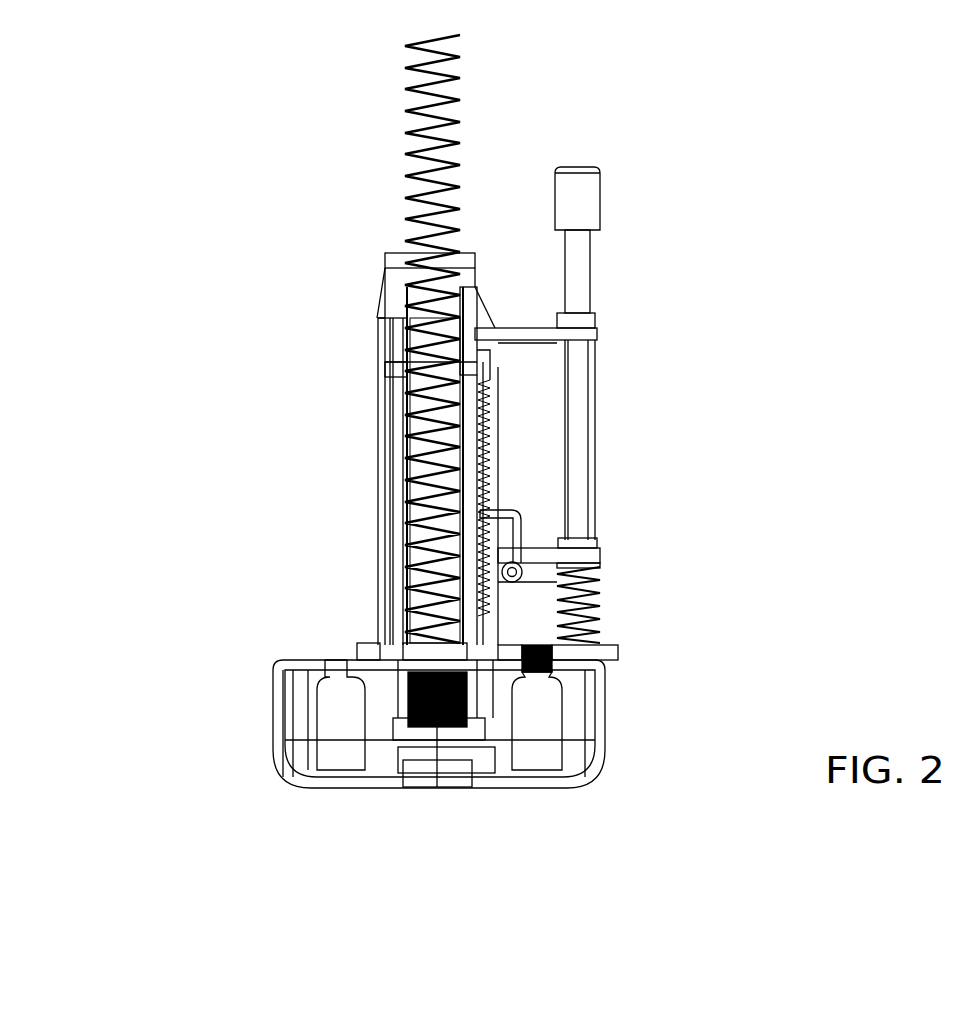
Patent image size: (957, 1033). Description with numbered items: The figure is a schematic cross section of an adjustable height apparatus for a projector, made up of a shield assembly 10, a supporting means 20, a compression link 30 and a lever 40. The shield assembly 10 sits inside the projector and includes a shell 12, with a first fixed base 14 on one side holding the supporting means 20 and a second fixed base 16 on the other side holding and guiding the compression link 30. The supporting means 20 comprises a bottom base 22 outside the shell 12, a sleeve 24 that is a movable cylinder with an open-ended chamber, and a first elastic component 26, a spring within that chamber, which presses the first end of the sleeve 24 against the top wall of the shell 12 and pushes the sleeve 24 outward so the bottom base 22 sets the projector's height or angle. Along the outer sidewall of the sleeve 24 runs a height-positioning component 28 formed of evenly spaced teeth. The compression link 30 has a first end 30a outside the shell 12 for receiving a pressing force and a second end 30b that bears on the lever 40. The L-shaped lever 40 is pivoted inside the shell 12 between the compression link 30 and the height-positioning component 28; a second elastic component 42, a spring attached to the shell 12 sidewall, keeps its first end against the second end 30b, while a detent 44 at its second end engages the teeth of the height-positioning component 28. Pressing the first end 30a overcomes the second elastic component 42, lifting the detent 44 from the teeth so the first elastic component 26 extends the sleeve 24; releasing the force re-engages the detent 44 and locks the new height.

The shield assembly 10 is at (697, 318).
The shell 12 is at (553, 397).
The first fixed base 14 is at (488, 358).
The second fixed base 16 is at (590, 321).
The supporting means 20 is at (147, 365).
The bottom base 22 is at (282, 706).
The sleeve 24 is at (403, 392).
The first elastic component 26 is at (410, 460).
The height-positioning component 28 is at (465, 540).
The compression link 30 is at (580, 273).
The first end of the compression link 30a is at (583, 200).
The second end of the compression link 30b is at (565, 520).
The lever 40 is at (675, 607).
The second elastic component 42 is at (598, 642).
The detent 44 is at (597, 583).